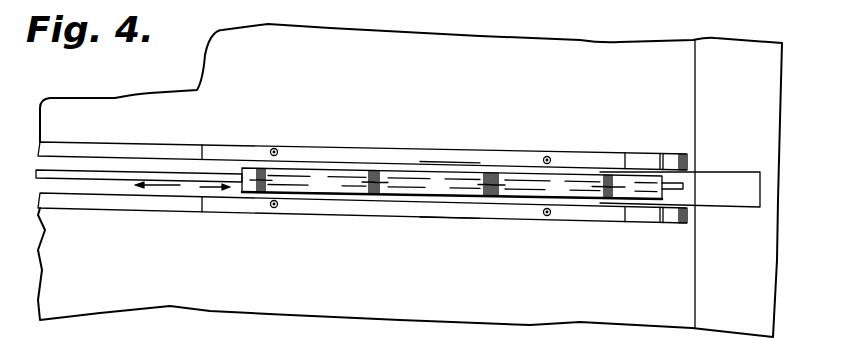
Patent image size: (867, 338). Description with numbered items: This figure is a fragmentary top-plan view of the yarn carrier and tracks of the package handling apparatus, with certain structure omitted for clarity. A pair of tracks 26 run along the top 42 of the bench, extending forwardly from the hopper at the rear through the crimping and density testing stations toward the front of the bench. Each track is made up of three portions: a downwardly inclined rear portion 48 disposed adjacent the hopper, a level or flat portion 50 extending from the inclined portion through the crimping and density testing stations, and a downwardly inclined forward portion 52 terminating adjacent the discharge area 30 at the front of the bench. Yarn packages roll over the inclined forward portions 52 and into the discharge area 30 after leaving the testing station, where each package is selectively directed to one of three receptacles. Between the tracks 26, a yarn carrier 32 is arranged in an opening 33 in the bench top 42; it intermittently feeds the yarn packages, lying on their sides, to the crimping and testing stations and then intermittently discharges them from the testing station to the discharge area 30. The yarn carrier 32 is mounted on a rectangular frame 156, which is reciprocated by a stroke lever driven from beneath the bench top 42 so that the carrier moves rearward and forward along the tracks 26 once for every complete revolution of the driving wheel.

The tracks 26 is at (449, 162).
The discharge area 30 is at (742, 124).
The yarn carrier 32 is at (519, 194).
The opening 33 is at (740, 162).
The bench top 42 is at (442, 122).
The inclined rear portion 48 is at (158, 150).
The flat portion 50 is at (369, 141).
The inclined forward portion 52 is at (672, 143).
The rectangular frame 156 is at (200, 176).